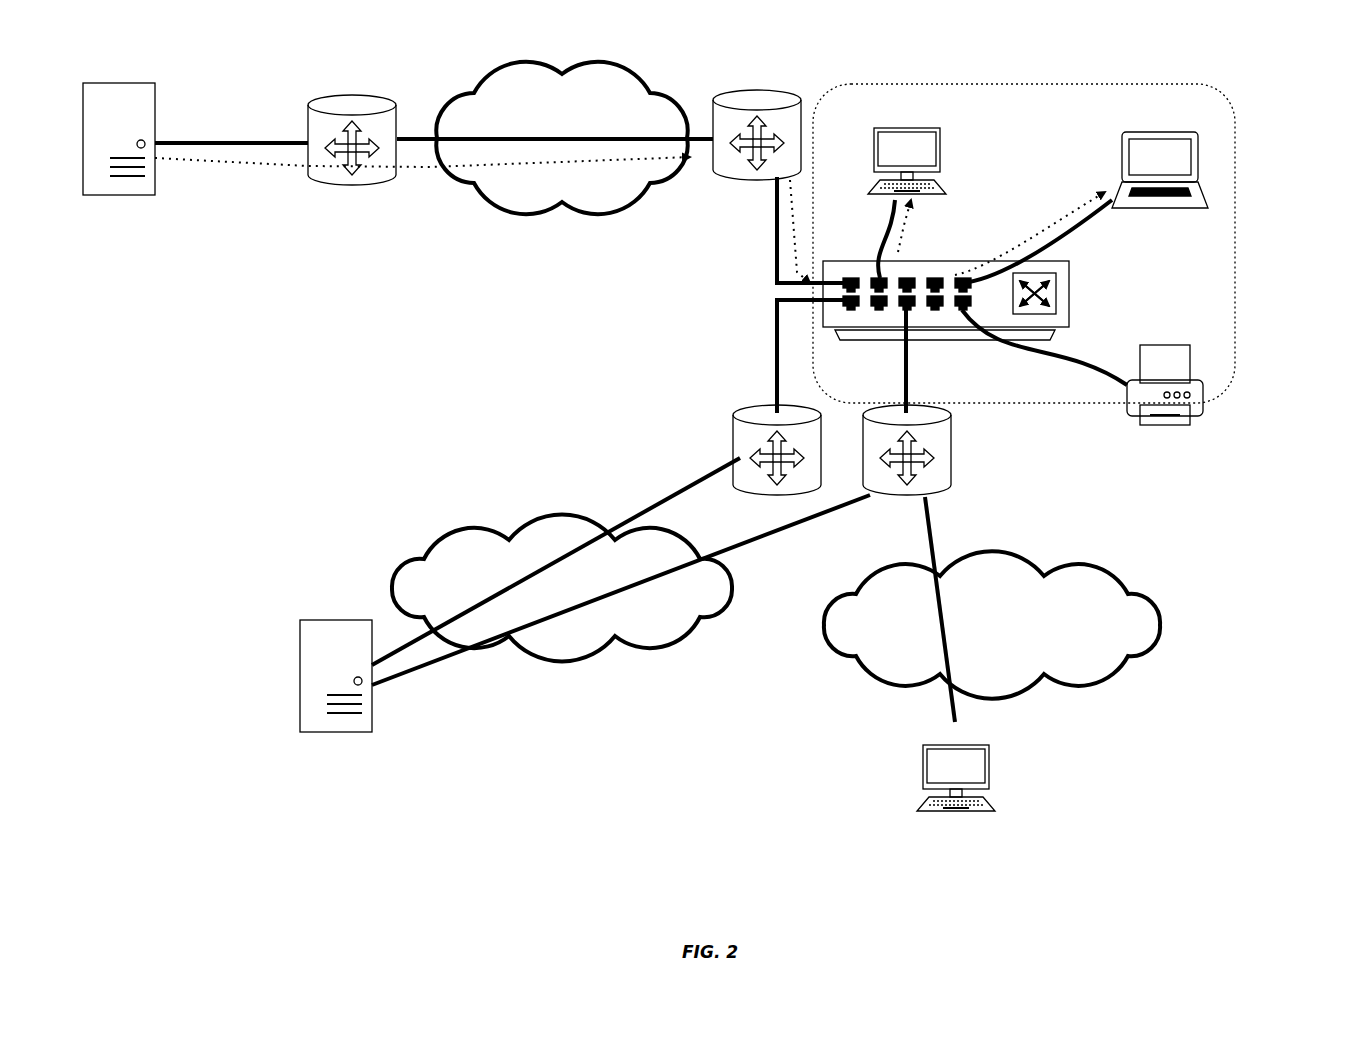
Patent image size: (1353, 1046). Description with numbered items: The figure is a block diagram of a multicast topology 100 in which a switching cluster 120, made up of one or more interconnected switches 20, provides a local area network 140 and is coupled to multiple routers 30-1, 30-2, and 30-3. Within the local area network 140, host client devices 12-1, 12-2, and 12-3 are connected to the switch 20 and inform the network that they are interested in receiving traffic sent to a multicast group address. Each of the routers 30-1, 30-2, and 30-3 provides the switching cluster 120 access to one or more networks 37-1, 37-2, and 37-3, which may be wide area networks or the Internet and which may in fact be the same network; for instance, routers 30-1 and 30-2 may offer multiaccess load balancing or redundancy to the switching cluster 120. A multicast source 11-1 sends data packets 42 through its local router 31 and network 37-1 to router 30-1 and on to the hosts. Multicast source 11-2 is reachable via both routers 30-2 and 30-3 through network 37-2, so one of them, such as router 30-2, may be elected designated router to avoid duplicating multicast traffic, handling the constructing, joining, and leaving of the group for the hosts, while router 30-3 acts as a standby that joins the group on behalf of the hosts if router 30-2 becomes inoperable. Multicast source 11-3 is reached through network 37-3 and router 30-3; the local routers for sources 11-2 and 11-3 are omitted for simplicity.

The multicast topology 100 is at (1208, 61).
The local area network 140 is at (1235, 178).
The switch 20 is at (986, 308).
The switching cluster 120 is at (977, 367).
The client device 12-1 is at (907, 145).
The client device 12-2 is at (1160, 152).
The client device 12-3 is at (1165, 371).
The multicast source 11-1 is at (137, 230).
The multicast source 11-2 is at (355, 766).
The multicast source 11-3 is at (974, 850).
The local router 31 is at (352, 123).
The router 30-1 is at (757, 118).
The router 30-2 is at (777, 465).
The router 30-3 is at (907, 465).
The network 37-1 is at (561, 162).
The network 37-2 is at (562, 611).
The network 37-3 is at (992, 634).
The data packets 42 is at (430, 170).